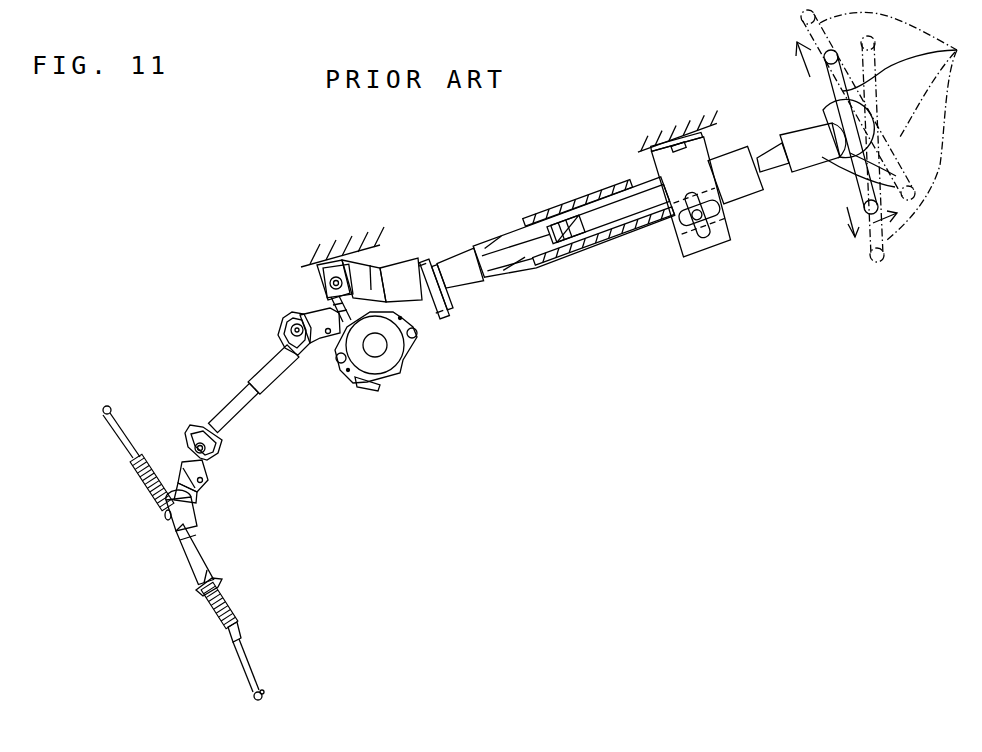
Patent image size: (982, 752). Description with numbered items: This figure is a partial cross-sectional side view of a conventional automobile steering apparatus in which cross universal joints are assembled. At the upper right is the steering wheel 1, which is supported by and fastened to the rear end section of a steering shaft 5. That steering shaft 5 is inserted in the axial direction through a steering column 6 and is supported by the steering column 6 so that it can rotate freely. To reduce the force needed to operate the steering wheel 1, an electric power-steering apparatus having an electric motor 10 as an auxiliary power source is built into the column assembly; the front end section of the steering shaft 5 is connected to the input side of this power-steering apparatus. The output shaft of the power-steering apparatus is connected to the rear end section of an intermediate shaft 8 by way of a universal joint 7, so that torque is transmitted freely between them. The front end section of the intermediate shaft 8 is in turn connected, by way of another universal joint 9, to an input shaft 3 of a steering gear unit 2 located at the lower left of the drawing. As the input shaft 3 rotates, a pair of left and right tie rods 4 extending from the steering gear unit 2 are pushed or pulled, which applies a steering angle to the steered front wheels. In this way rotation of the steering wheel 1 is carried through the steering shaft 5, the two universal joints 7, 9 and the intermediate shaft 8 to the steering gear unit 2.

The steering wheel 1 is at (957, 50).
The steering gear unit 2 is at (163, 518).
The input shaft 3 is at (190, 486).
The tie rods 4 is at (131, 435).
The steering shaft 5 is at (520, 250).
The steering column 6 is at (742, 187).
The universal joint 7 is at (298, 323).
The intermediate shaft 8 is at (268, 372).
The universal joint 9 is at (197, 435).
The electric motor 10 is at (390, 358).